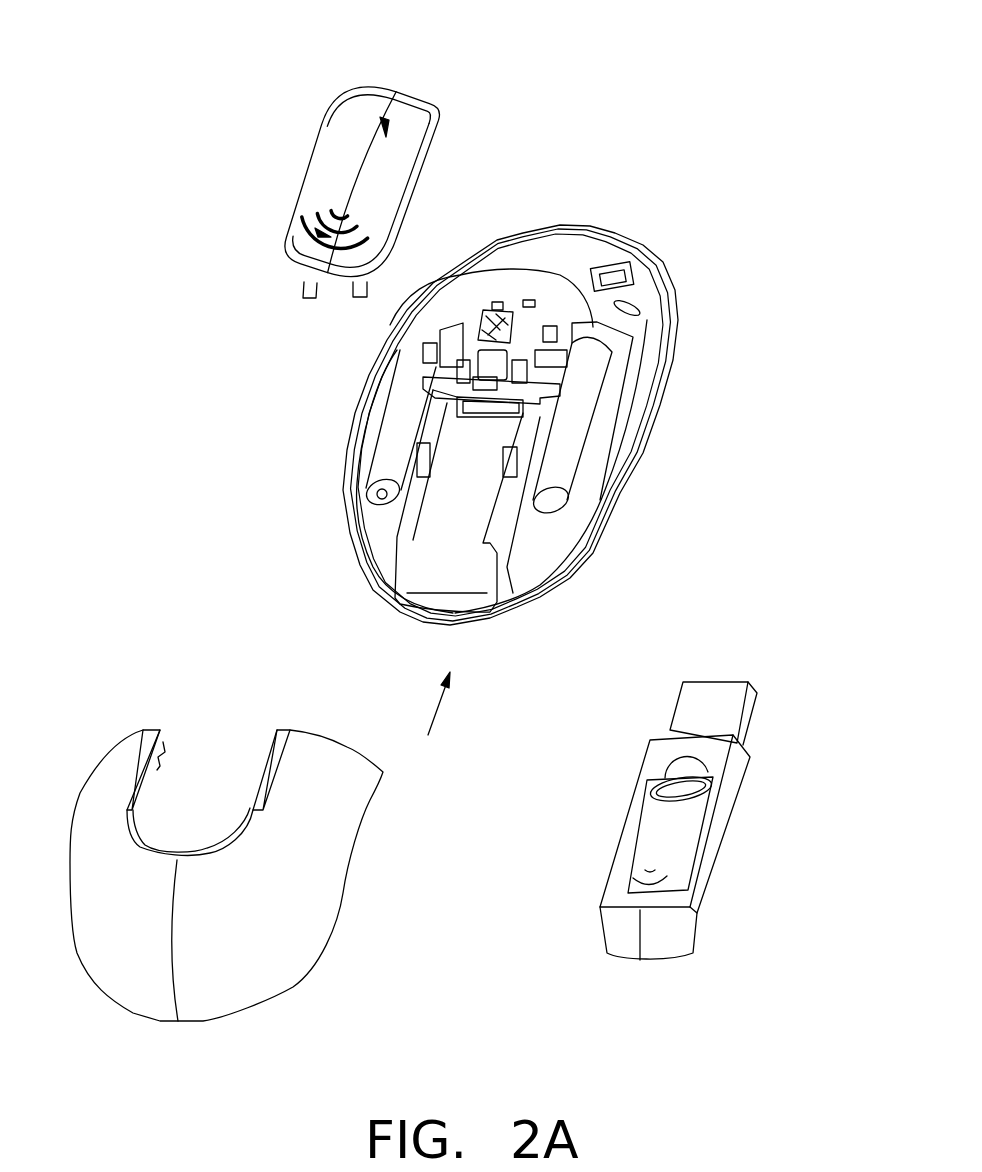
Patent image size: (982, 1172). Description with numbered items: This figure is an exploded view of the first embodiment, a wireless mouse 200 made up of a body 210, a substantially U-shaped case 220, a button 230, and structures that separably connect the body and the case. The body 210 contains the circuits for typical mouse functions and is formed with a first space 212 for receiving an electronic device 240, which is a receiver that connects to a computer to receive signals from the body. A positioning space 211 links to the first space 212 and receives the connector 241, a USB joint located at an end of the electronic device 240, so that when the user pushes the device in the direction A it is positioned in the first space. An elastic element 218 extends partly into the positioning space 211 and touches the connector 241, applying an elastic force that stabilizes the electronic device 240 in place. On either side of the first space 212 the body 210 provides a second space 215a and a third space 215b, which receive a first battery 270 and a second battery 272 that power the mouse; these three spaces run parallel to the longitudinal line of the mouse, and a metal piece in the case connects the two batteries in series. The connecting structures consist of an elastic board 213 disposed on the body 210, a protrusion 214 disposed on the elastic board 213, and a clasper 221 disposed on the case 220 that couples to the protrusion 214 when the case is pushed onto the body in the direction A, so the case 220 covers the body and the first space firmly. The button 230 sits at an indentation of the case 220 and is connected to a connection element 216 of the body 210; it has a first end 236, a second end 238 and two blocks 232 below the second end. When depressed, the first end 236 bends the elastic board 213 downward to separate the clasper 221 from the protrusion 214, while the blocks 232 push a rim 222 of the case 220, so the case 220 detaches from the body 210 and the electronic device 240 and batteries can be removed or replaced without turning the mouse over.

The wireless mouse 200 is at (706, 92).
The body 210 is at (673, 272).
The positioning space 211 is at (495, 405).
The first space 212 is at (467, 577).
The elastic board 213 is at (490, 300).
The protrusion 214 is at (425, 355).
The second space 215a is at (387, 543).
The third space 215b is at (540, 567).
The connection element 216 is at (520, 362).
The elastic element 218 is at (507, 305).
The case 220 is at (380, 773).
The clasper 221 is at (168, 767).
The rim 222 is at (193, 866).
The button 230 is at (440, 127).
The blocks 232 is at (357, 298).
The first end 236 is at (388, 94).
The second end 238 is at (317, 232).
The electronic device 240 is at (718, 878).
The connector 241 is at (733, 703).
The first battery 270 is at (387, 453).
The second battery 272 is at (567, 470).